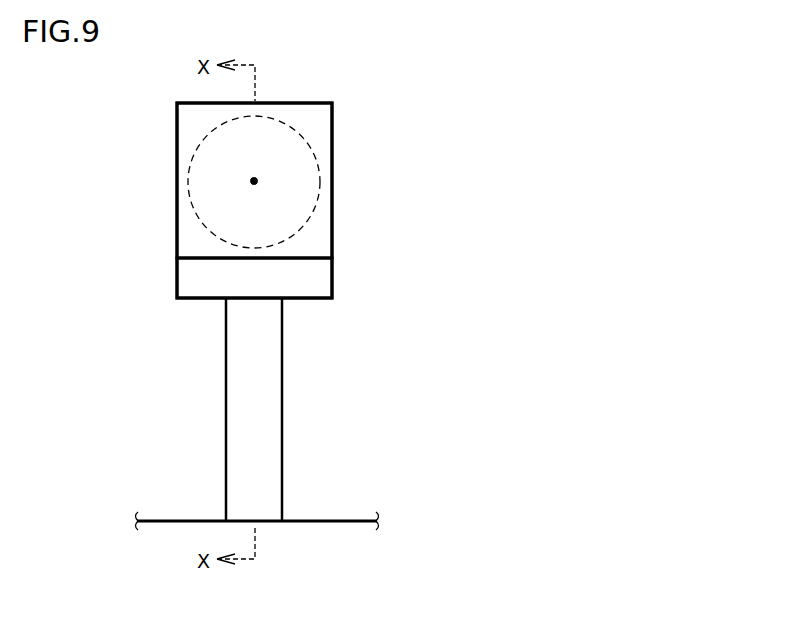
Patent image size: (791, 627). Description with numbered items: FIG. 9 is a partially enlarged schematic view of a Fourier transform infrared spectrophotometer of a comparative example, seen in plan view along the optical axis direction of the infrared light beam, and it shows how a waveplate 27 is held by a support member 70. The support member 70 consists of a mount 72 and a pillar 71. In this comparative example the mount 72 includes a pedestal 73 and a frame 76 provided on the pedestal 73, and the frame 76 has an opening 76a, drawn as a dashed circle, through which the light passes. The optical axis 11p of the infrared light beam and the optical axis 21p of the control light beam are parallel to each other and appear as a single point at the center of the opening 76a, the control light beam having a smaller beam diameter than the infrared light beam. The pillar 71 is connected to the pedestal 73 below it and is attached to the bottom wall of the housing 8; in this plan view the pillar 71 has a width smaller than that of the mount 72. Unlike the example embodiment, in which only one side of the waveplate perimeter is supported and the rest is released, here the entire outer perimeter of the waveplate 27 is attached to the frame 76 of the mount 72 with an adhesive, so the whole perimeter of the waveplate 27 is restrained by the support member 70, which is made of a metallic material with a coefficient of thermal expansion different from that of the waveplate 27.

The waveplate 27 is at (332, 123).
The opening 76a is at (312, 152).
The optical axis of infrared light beam 11p is at (257, 181).
The optical axis of control light beam 21p is at (254, 181).
The frame 76 is at (316, 238).
The pedestal 73 is at (332, 273).
The mount 72 is at (390, 220).
The support member 70 is at (428, 240).
The pillar 71 is at (283, 352).
The housing 8 is at (327, 521).